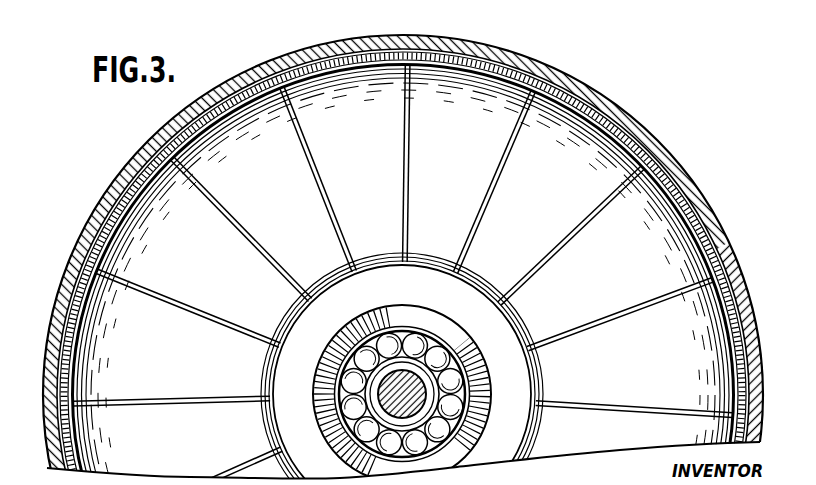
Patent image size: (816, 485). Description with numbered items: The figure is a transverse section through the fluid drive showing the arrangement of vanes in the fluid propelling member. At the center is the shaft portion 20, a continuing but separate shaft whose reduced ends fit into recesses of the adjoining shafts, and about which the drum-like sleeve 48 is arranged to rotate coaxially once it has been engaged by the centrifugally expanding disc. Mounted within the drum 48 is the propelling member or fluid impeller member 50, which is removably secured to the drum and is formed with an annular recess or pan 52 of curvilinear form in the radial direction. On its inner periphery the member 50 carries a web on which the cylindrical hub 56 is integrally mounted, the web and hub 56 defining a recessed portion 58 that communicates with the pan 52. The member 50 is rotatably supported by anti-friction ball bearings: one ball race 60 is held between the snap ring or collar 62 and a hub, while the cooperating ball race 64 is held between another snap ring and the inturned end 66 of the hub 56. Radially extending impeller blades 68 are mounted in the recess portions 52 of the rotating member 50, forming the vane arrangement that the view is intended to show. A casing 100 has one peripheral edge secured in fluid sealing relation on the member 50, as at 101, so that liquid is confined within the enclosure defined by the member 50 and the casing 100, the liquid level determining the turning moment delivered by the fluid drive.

The shaft portion 20 is at (410, 405).
The drum-like sleeve 48 is at (693, 188).
The propelling member or fluid impeller member 50 is at (573, 110).
The annular recess or pan 52 is at (448, 197).
The hub 56 is at (483, 399).
The recessed portion 58 is at (277, 422).
The ball race 60 is at (363, 383).
The snap ring or collar 62 is at (362, 342).
The cooperating ball race 64 is at (448, 354).
The inturned end of hub 66 is at (447, 337).
The impeller blades 68 is at (558, 245).
The casing 100 is at (630, 137).
The fluid sealing connection 101 is at (412, 52).